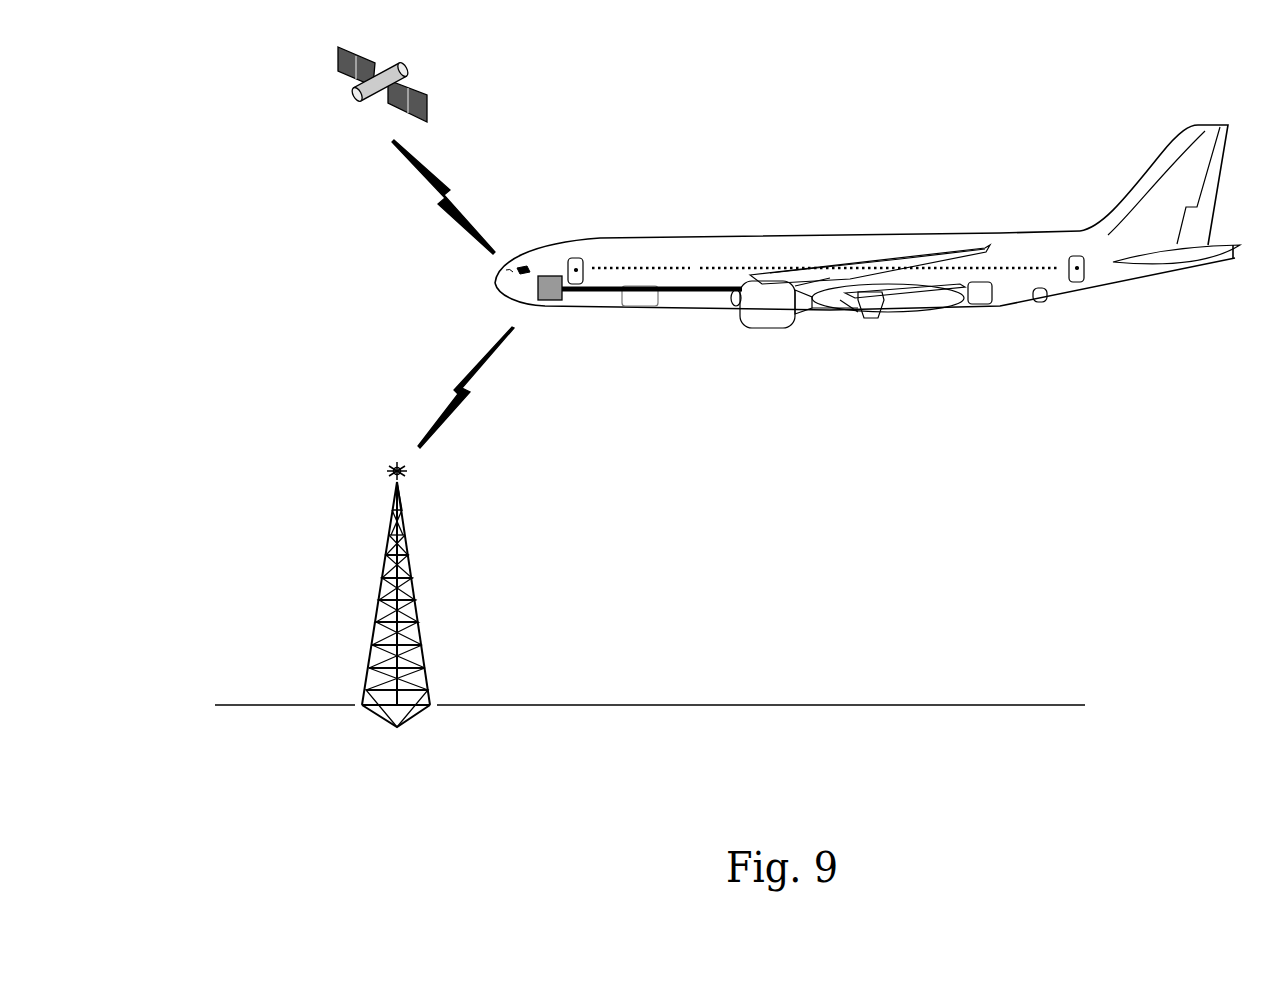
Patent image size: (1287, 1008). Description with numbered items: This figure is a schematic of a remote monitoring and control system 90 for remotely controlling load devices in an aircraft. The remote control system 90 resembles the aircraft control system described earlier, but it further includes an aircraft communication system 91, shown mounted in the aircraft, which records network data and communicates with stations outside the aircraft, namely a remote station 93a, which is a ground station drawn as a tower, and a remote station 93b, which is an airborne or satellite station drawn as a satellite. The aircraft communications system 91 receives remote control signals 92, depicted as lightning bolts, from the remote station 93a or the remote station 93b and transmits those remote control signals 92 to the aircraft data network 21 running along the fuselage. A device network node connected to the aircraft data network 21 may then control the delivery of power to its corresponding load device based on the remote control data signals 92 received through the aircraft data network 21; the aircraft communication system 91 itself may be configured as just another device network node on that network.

The remote monitoring and control system 90 is at (893, 80).
The aircraft communication system 91 is at (554, 268).
The remote control signals 92 is at (412, 294).
The remote station 93a is at (494, 594).
The remote station 93b is at (317, 101).
The aircraft data network 21 is at (672, 305).